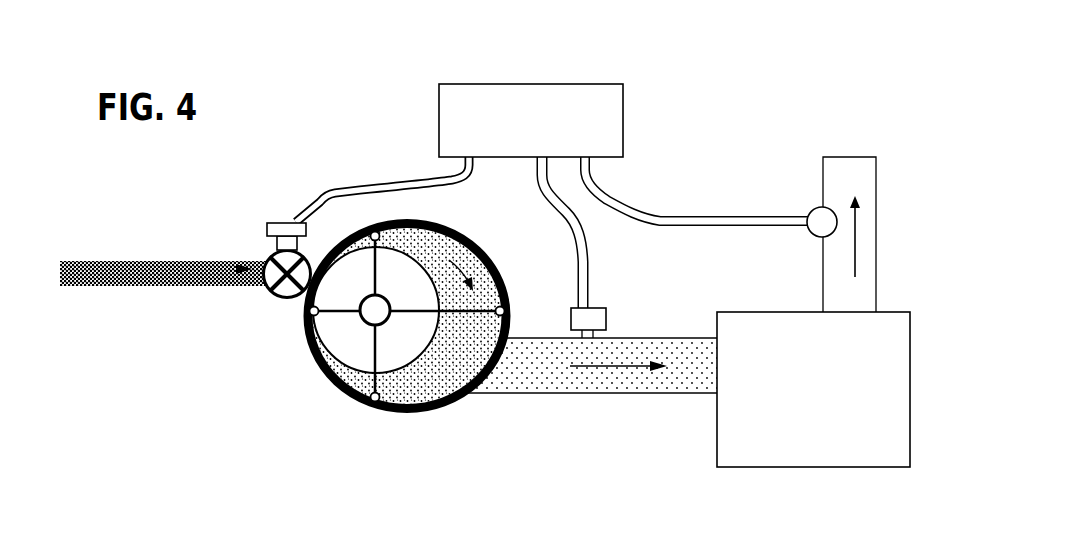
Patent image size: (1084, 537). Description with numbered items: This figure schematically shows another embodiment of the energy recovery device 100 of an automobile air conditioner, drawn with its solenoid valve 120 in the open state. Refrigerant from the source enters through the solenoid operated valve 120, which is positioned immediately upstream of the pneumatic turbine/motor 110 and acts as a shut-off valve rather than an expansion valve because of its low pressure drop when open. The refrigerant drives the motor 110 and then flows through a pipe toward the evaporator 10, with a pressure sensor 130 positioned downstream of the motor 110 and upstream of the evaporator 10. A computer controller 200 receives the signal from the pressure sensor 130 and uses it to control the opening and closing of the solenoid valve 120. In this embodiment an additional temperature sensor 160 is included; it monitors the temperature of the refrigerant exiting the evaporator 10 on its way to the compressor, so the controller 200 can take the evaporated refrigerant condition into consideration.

The energy recovery device 100 is at (471, 244).
The computer controller 200 is at (624, 129).
The solenoid operated valve 120 is at (262, 241).
The pneumatic turbine/motor 110 is at (333, 385).
The pressure sensor 130 is at (600, 322).
The temperature sensor 160 is at (813, 238).
The evaporator 10 is at (717, 425).